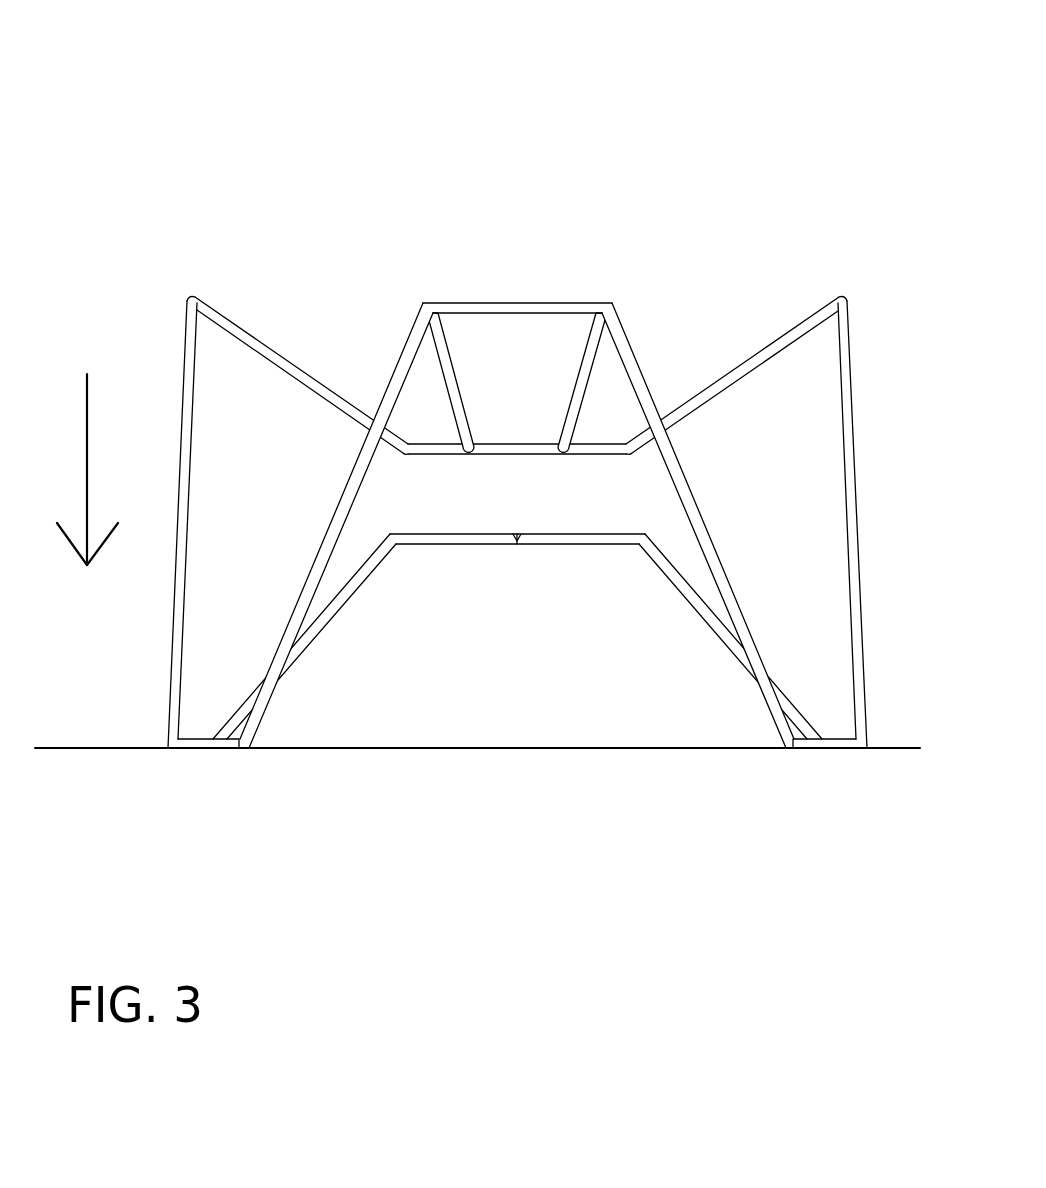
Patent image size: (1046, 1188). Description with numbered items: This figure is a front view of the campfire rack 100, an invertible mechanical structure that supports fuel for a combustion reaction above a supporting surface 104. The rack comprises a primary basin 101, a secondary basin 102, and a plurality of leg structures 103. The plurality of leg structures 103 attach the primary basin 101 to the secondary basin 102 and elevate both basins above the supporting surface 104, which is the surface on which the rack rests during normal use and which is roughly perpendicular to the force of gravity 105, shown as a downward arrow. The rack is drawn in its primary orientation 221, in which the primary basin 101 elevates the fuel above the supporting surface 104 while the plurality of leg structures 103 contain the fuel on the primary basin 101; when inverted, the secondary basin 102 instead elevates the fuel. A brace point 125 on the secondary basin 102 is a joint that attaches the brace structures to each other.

The campfire rack 100 is at (168, 154).
The primary orientation 221 is at (769, 167).
The primary basin 101 is at (493, 452).
The secondary basin 102 is at (532, 578).
The plurality of leg structures 103 is at (625, 343).
The supporting surface 104 is at (80, 747).
The force of gravity 105 is at (62, 469).
The brace point 125 is at (517, 544).